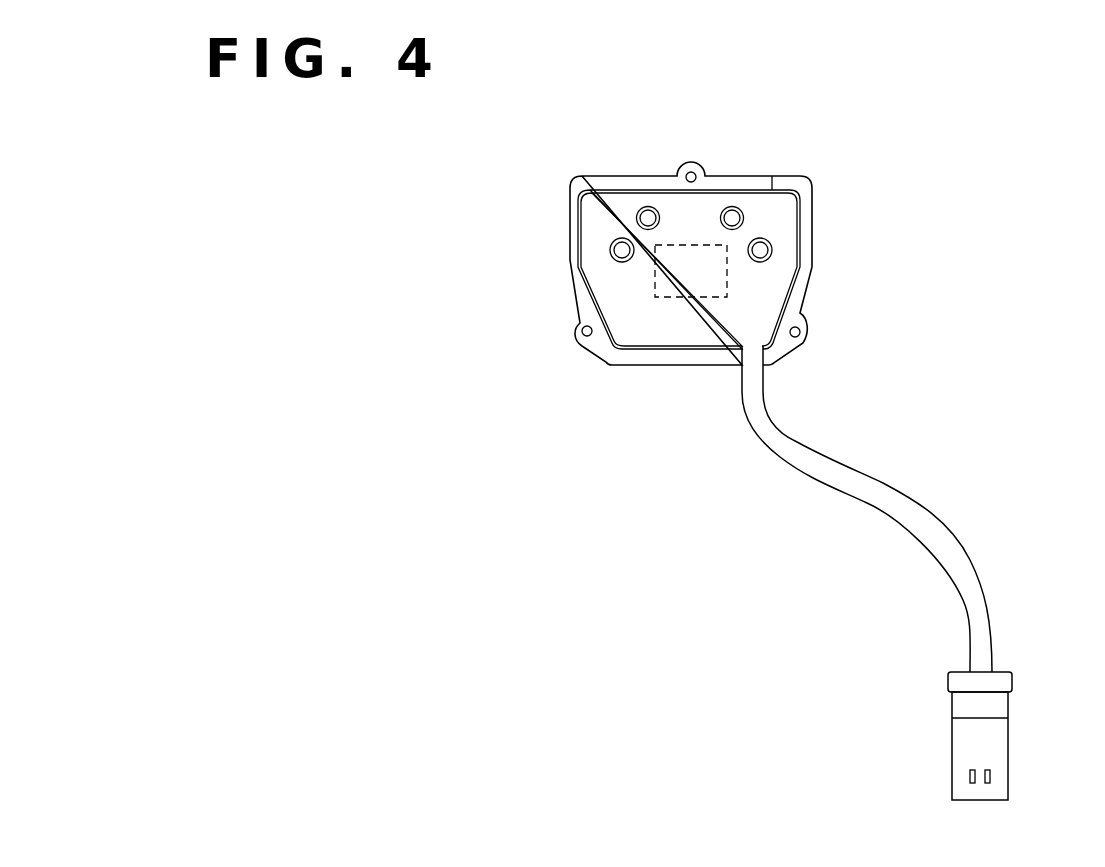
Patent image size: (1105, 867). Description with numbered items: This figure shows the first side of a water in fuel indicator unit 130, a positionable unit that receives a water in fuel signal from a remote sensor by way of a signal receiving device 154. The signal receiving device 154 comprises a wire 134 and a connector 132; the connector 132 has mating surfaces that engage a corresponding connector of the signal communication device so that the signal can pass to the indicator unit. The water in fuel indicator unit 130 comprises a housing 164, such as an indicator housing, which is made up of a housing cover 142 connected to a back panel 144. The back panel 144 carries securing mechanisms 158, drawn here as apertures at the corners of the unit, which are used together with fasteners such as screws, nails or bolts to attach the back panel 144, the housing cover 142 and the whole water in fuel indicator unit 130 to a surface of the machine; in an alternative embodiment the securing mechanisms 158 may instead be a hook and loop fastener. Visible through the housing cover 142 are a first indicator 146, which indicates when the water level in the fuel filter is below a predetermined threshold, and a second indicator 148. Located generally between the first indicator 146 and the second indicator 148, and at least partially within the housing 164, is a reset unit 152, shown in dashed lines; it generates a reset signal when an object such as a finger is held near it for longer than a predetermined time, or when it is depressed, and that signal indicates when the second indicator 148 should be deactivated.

The water in fuel indicator unit 130 is at (895, 192).
The connector 132 is at (1008, 731).
The wire 134 is at (868, 503).
The housing cover 142 is at (773, 177).
The back panel 144 is at (815, 200).
The first indicator 146 is at (643, 216).
The second indicator 148 is at (732, 207).
The reset unit 152 is at (665, 300).
The signal receiving device 154 is at (988, 510).
The securing mechanisms 158 is at (687, 174).
The housing 164 is at (786, 150).